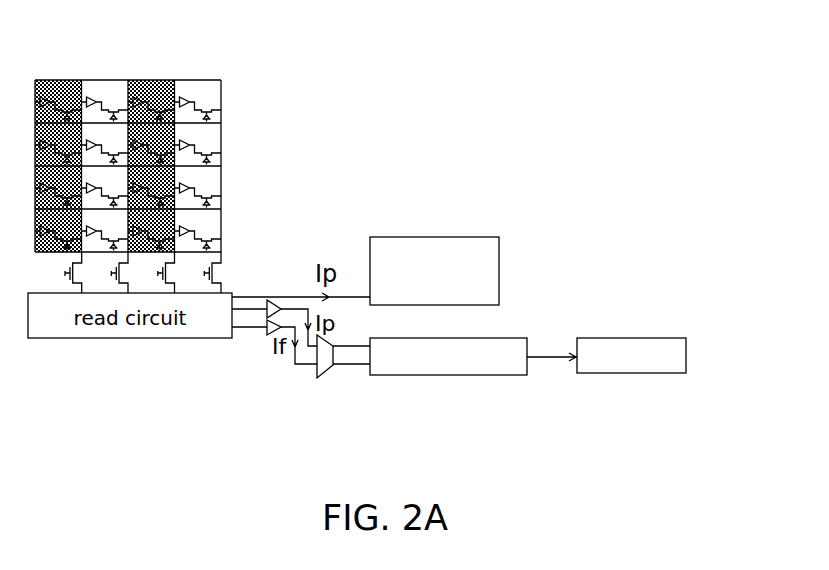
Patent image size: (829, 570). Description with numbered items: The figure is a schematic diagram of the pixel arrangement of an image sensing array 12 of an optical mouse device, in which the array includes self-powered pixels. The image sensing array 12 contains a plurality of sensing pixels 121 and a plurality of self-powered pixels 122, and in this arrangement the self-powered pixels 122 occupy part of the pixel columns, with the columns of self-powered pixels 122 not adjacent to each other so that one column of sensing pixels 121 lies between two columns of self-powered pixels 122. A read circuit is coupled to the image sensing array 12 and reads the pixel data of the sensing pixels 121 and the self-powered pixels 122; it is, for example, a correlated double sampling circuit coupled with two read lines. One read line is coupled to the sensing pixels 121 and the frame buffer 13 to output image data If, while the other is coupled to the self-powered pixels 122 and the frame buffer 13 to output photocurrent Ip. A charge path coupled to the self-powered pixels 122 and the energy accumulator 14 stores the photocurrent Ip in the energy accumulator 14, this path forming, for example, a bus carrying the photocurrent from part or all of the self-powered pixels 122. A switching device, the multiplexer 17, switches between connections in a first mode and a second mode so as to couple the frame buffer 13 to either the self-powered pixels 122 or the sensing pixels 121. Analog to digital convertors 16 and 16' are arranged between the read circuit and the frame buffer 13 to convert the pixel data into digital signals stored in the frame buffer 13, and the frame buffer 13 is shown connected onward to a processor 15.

The image sensing array 12 is at (182, 158).
The sensing pixels 121 is at (47, 82).
The self-powered pixels 122 is at (92, 88).
The frame buffer 13 is at (500, 375).
The energy accumulator 14 is at (499, 275).
The processor 15 is at (688, 357).
The analog to digital convertor 16 is at (290, 284).
The analog to digital convertor 16' is at (241, 351).
The multiplexer 17 is at (325, 378).